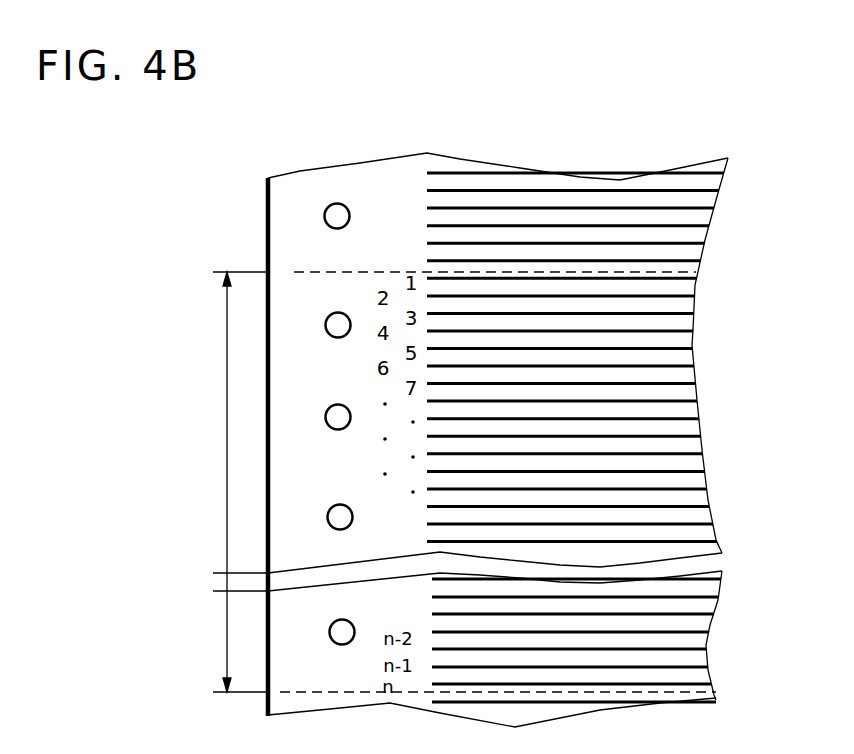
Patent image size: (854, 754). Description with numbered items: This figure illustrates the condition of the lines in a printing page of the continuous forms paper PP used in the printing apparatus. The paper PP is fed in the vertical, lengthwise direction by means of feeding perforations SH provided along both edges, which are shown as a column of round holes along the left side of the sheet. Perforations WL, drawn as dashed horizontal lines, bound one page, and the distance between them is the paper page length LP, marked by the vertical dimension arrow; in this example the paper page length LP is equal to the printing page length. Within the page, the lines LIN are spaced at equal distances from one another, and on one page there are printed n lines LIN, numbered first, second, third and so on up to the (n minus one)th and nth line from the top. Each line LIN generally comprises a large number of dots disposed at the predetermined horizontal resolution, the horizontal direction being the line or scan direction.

The continuous forms paper PP is at (492, 162).
The lines LIN is at (645, 207).
The feeding perforations SH is at (324, 212).
The perforations WL is at (294, 272).
The paper page length LP is at (185, 482).